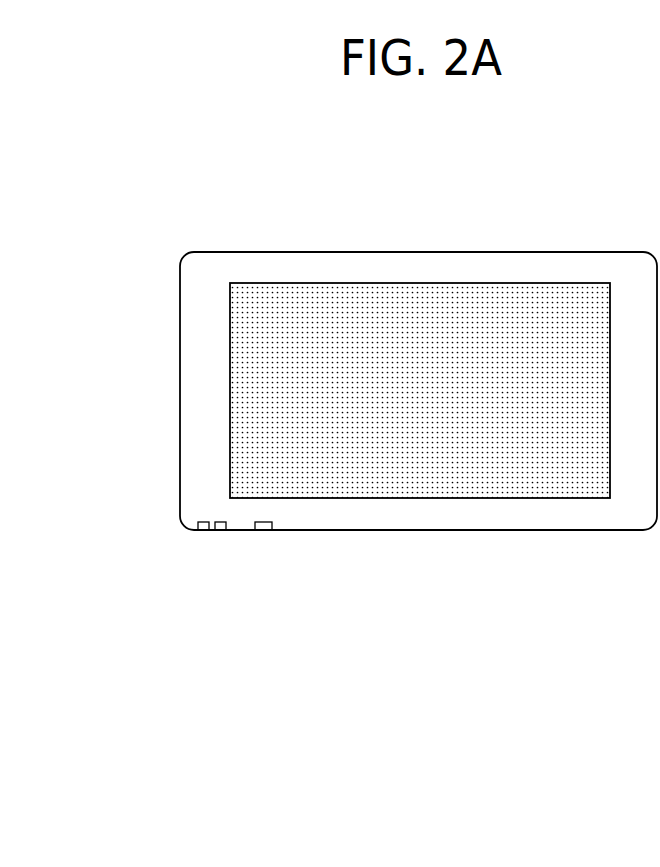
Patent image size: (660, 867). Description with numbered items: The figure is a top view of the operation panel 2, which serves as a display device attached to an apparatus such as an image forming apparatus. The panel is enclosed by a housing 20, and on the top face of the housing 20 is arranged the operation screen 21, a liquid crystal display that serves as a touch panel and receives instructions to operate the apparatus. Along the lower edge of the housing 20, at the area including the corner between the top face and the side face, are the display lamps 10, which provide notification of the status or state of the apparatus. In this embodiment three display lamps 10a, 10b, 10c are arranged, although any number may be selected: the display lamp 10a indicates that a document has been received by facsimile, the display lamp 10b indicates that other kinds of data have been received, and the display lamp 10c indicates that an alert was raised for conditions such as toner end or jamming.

The operation panel 2 is at (523, 238).
The housing 20 is at (473, 514).
The operation screen 21 is at (338, 300).
The display lamps 10 is at (320, 608).
The display lamp 10a is at (203, 531).
The display lamp 10b is at (222, 531).
The display lamp 10c is at (267, 531).